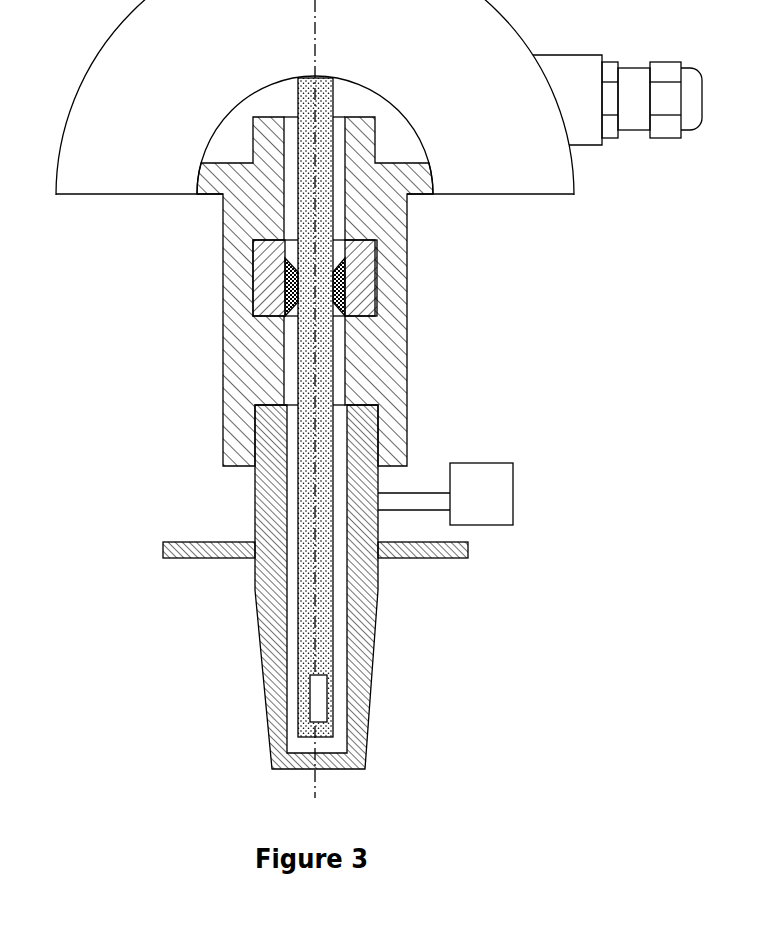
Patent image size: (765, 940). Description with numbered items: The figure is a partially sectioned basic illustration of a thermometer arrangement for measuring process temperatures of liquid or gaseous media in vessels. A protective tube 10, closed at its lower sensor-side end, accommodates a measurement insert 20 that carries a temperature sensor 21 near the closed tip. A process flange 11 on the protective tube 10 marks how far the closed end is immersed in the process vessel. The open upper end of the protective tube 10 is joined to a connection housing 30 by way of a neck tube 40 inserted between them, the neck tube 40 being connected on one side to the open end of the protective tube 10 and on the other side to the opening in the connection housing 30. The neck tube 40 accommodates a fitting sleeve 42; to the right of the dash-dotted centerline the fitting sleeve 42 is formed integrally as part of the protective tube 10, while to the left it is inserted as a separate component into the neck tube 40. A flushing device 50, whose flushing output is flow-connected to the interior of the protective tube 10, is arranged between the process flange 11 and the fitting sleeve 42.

The connection housing 30 is at (162, 163).
The neck tube 40 is at (407, 387).
The fitting sleeve 42 is at (265, 302).
The flushing device 50 is at (483, 493).
The process flange 11 is at (423, 558).
The protective tube 10 is at (378, 629).
The measurement insert 20 is at (333, 645).
The temperature sensor 21 is at (320, 707).